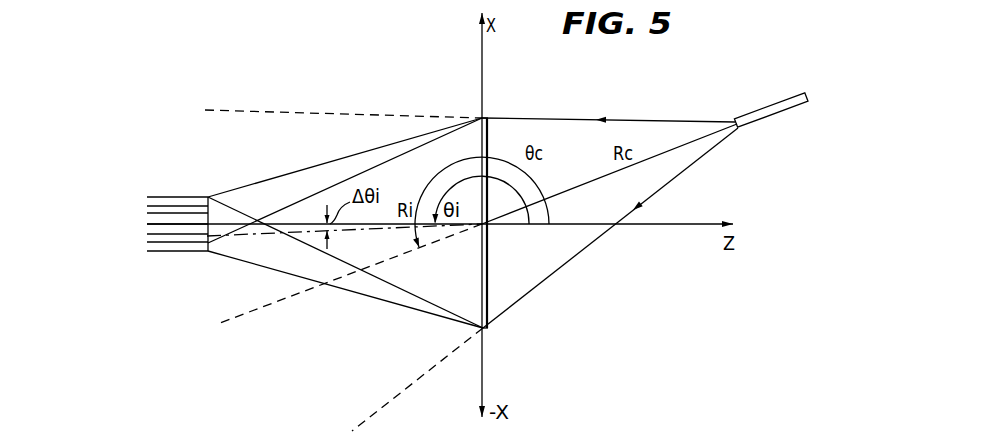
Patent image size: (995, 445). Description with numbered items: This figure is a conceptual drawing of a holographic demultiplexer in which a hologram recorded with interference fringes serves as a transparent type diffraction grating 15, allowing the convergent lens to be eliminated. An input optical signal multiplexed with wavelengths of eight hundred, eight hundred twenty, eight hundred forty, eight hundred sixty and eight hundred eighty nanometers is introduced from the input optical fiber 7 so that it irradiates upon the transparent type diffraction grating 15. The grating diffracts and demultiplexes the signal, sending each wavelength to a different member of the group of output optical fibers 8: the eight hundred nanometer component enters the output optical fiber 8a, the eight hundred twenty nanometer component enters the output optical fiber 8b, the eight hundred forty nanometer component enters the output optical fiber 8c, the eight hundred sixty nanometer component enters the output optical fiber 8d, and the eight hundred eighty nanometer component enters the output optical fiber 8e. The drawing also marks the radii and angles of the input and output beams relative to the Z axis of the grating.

The input optical fiber 7 is at (776, 124).
The output optical fibers 8 is at (168, 253).
The output optical fiber 8a is at (147, 246).
The output optical fiber 8b is at (147, 237).
The output optical fiber 8c is at (147, 226).
The output optical fiber 8d is at (147, 210).
The output optical fiber 8e is at (147, 200).
The transparent type diffraction grating 15 is at (482, 272).